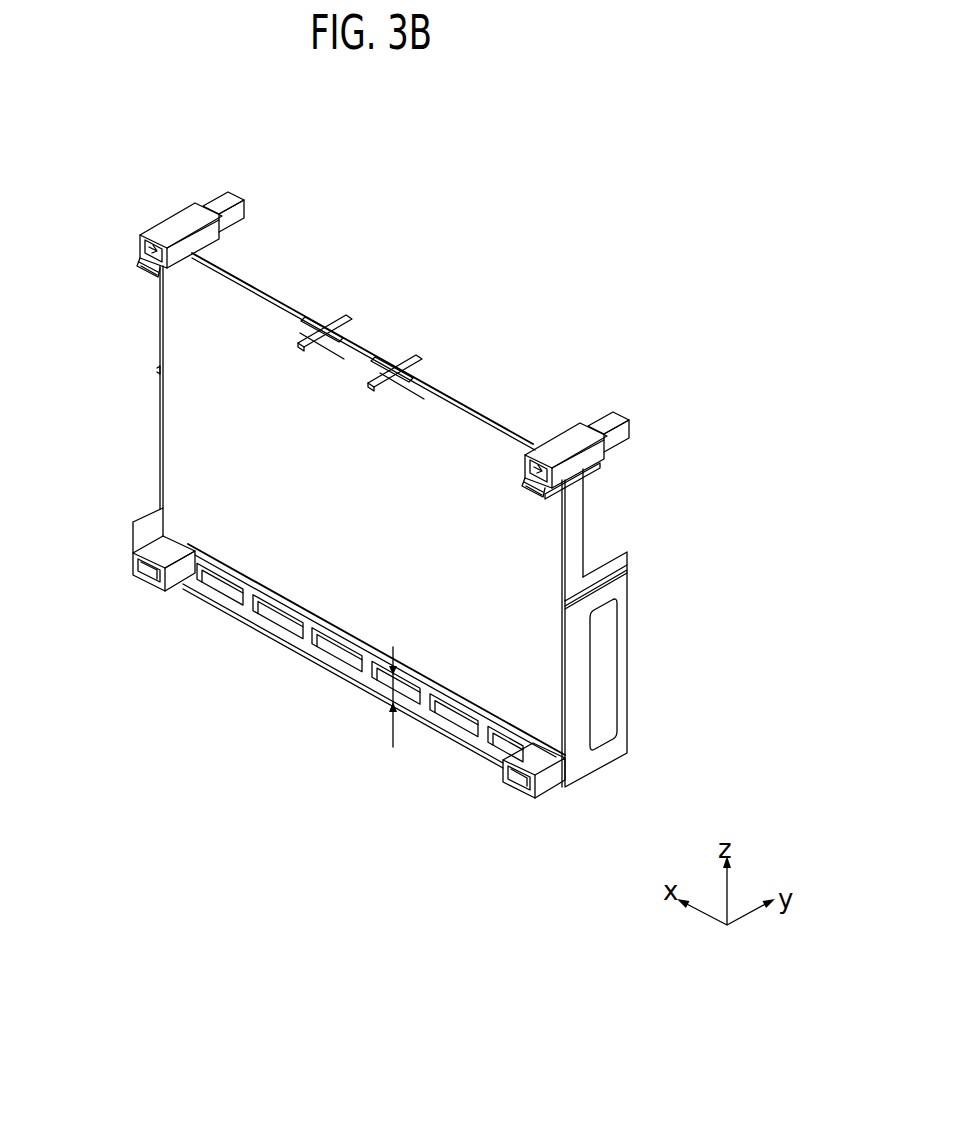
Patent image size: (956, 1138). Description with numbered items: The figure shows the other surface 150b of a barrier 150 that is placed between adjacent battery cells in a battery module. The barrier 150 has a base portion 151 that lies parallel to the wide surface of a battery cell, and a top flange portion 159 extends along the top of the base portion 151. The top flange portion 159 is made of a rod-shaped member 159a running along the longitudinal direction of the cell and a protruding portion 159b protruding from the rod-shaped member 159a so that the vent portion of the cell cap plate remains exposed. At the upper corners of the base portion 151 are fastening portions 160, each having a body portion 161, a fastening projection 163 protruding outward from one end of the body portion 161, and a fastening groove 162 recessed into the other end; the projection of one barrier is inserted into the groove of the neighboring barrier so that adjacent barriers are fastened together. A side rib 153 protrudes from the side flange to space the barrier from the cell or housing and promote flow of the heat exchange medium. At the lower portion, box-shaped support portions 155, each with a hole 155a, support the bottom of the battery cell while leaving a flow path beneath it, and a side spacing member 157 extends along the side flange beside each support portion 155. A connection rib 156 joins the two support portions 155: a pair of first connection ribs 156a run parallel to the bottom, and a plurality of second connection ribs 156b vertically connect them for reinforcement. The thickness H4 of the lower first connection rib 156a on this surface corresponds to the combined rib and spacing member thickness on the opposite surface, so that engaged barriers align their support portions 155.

The barrier 150 is at (540, 228).
The other surface 150b is at (249, 313).
The base portion 151 is at (256, 533).
The side rib 153 is at (604, 466).
The support portion 155 is at (155, 551).
The hole 155a is at (148, 576).
The connection rib 156 is at (268, 714).
The first connection rib 156a is at (280, 611).
The second connection rib 156b is at (312, 636).
The side spacing member 157 is at (150, 525).
The top flange portion 159 is at (456, 322).
The rod-shaped member 159a is at (428, 407).
The protruding portion 159b is at (303, 340).
The fastening portion 160 is at (146, 209).
The body portion 161 is at (187, 211).
The fastening groove 162 is at (143, 248).
The fastening projection 163 is at (233, 203).
The thickness of lower first connection rib H4 is at (398, 708).